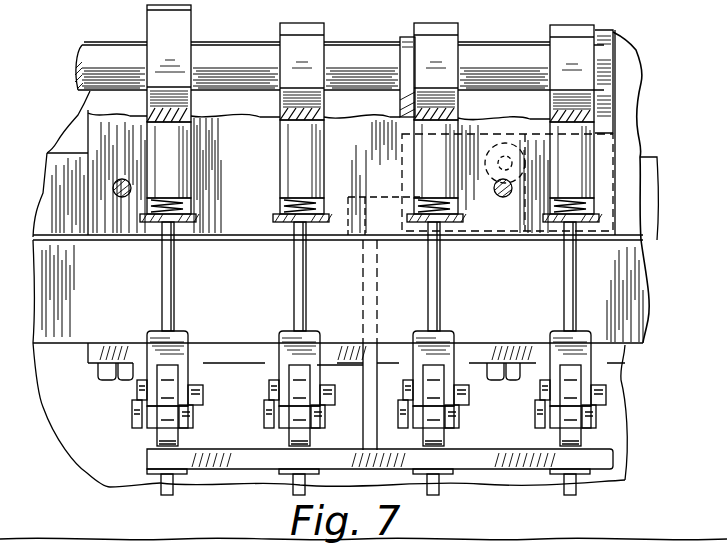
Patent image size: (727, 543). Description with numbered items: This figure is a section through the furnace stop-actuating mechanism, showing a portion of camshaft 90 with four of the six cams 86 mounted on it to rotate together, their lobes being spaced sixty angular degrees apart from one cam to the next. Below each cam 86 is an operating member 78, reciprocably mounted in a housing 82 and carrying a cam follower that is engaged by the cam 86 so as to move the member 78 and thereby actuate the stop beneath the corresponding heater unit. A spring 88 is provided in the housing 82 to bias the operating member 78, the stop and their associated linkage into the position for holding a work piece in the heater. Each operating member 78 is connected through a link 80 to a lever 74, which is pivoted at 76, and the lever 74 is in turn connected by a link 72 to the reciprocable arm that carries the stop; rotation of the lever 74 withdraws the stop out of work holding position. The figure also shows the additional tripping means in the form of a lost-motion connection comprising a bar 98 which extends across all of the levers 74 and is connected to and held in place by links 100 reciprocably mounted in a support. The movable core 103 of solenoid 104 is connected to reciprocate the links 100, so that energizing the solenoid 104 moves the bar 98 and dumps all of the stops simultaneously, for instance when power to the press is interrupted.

The link 72 is at (288, 485).
The lever 74 is at (167, 437).
The pivot 76 is at (200, 403).
The operating member 78 is at (283, 163).
The link 80 is at (173, 293).
The housing 82 is at (630, 53).
The cam 86 is at (185, 18).
The spring 88 is at (282, 210).
The shaft 90 is at (117, 57).
The bar 98 is at (220, 462).
The link 100 is at (365, 320).
The movable core 103 is at (493, 134).
The solenoid 104 is at (407, 102).